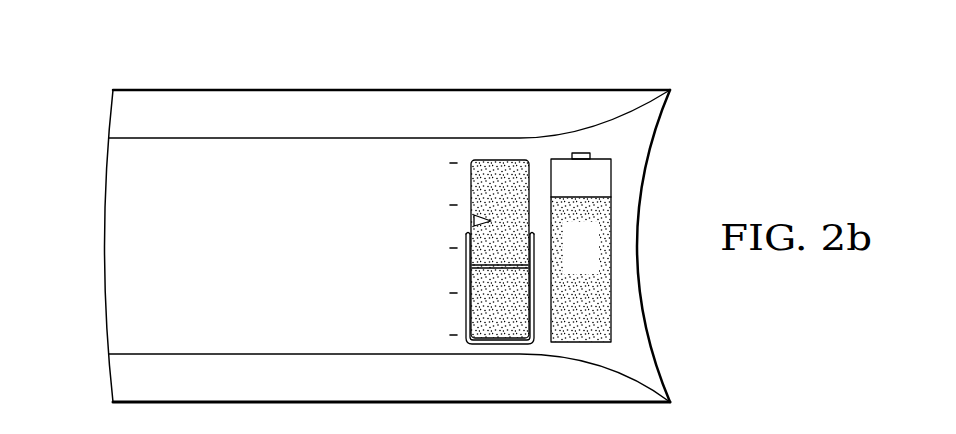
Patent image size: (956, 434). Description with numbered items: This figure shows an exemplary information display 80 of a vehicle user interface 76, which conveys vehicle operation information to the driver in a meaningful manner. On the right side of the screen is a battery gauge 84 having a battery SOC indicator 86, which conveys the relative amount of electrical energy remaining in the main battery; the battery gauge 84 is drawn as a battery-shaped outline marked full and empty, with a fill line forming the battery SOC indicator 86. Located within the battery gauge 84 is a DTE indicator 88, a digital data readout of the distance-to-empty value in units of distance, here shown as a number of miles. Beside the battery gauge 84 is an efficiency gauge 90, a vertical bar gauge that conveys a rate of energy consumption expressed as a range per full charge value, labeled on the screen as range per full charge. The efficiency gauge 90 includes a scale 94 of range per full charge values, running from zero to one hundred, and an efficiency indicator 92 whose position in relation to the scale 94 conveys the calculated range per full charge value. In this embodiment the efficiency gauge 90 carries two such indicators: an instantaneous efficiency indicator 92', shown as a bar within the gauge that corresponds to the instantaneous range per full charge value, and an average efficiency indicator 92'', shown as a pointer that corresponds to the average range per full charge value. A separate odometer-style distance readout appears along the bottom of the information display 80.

The user interface 76 is at (132, 59).
The information display 80 is at (103, 258).
The battery gauge 84 is at (610, 283).
The battery SOC indicator 86 is at (581, 196).
The DTE indicator 88 is at (608, 238).
The efficiency gauge 90 is at (500, 158).
The efficiency indicator 92 is at (513, 172).
The instantaneous efficiency indicator 92' is at (520, 349).
The average efficiency indicator 92'' is at (469, 142).
The scale 94 is at (430, 149).